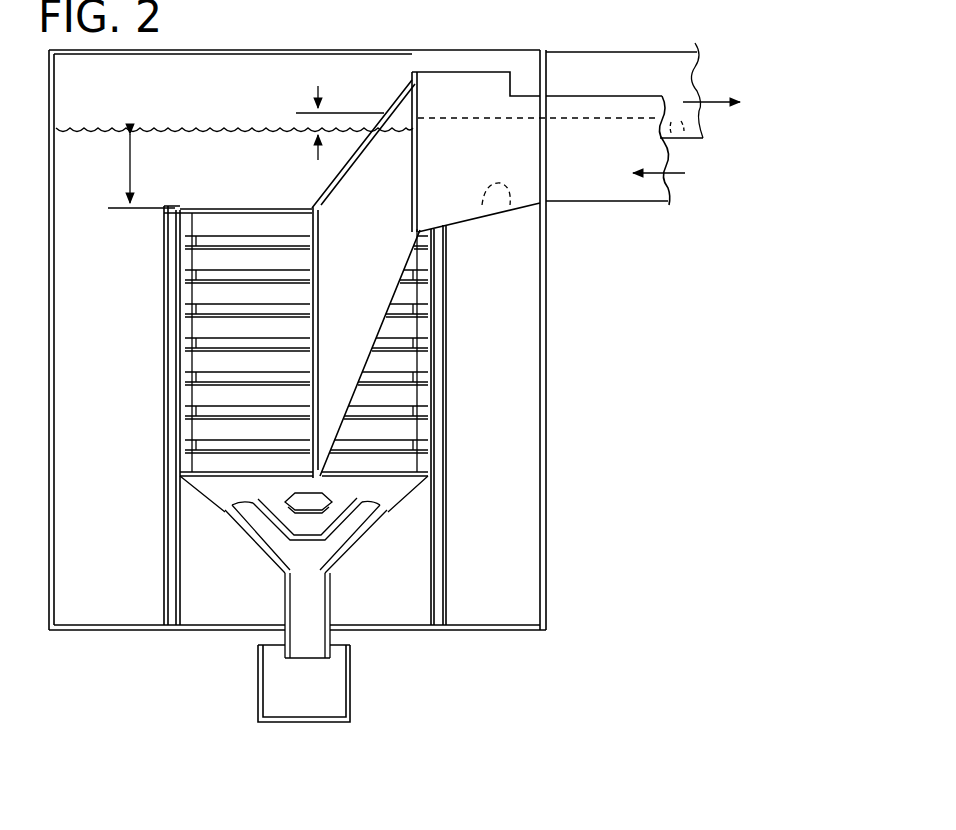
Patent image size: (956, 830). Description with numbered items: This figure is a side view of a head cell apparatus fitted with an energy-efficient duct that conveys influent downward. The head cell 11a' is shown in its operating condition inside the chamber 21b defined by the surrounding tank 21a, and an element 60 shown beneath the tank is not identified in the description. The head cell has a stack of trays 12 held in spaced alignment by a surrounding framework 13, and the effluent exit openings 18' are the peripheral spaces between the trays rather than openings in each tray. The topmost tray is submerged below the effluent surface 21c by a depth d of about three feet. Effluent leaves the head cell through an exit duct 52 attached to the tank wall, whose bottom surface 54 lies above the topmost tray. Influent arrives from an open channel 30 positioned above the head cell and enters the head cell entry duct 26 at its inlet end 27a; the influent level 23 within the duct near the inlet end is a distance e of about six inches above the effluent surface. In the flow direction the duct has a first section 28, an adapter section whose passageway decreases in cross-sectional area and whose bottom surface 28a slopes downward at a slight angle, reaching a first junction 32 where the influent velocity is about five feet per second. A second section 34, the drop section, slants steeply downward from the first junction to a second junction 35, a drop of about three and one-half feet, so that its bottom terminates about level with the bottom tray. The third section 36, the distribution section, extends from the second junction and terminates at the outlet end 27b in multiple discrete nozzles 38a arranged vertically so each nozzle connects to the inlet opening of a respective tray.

The head cell 11a' is at (129, 118).
The effluent surface 21c is at (176, 129).
The tank 21a is at (132, 540).
The chamber 21b is at (548, 371).
The submersion depth d is at (128, 170).
The influent level distance e is at (300, 123).
The tray 12 is at (177, 357).
The discrete nozzle 38a is at (213, 262).
The effluent exit opening 18' is at (263, 352).
The outlet end 27b is at (175, 371).
The head cell entry duct 26 is at (372, 285).
The third section 36 is at (308, 203).
The second junction 35 is at (311, 203).
The second section 34 is at (400, 84).
The first junction 32 is at (413, 72).
The first section 28 is at (545, 49).
The open channel 30 is at (612, 96).
The influent level 23 is at (566, 113).
The exit duct 52 is at (655, 52).
The bottom surface of exit duct 54 is at (683, 141).
The bottom surface of first section 28a is at (486, 217).
The inlet end 27a is at (568, 228).
The surrounding framework 13 is at (437, 370).
The collection box 60 is at (350, 693).